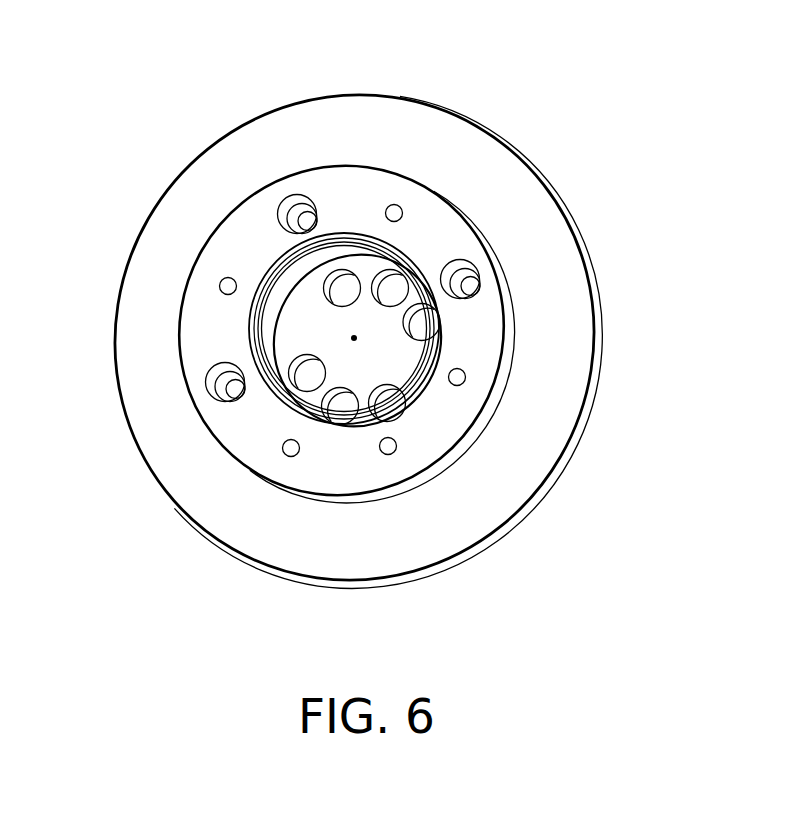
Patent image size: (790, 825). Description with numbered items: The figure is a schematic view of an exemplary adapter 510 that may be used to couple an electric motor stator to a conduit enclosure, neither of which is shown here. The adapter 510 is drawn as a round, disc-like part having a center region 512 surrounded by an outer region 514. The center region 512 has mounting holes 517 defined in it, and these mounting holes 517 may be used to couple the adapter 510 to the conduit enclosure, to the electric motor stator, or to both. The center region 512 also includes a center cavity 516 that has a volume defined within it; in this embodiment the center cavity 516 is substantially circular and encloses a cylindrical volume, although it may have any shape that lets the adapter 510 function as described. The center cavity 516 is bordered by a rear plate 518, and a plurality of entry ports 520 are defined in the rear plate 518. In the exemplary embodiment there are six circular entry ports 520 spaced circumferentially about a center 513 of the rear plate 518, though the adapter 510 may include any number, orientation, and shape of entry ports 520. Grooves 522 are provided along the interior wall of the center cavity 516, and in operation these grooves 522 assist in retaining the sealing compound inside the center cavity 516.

The adapter 510 is at (181, 85).
The center region 512 is at (427, 442).
The center 513 is at (354, 338).
The outer region 514 is at (553, 338).
The center cavity 516 is at (407, 366).
The mounting holes 517 is at (468, 270).
The rear plate 518 is at (287, 343).
The entry ports 520 is at (326, 416).
The grooves 522 is at (252, 318).